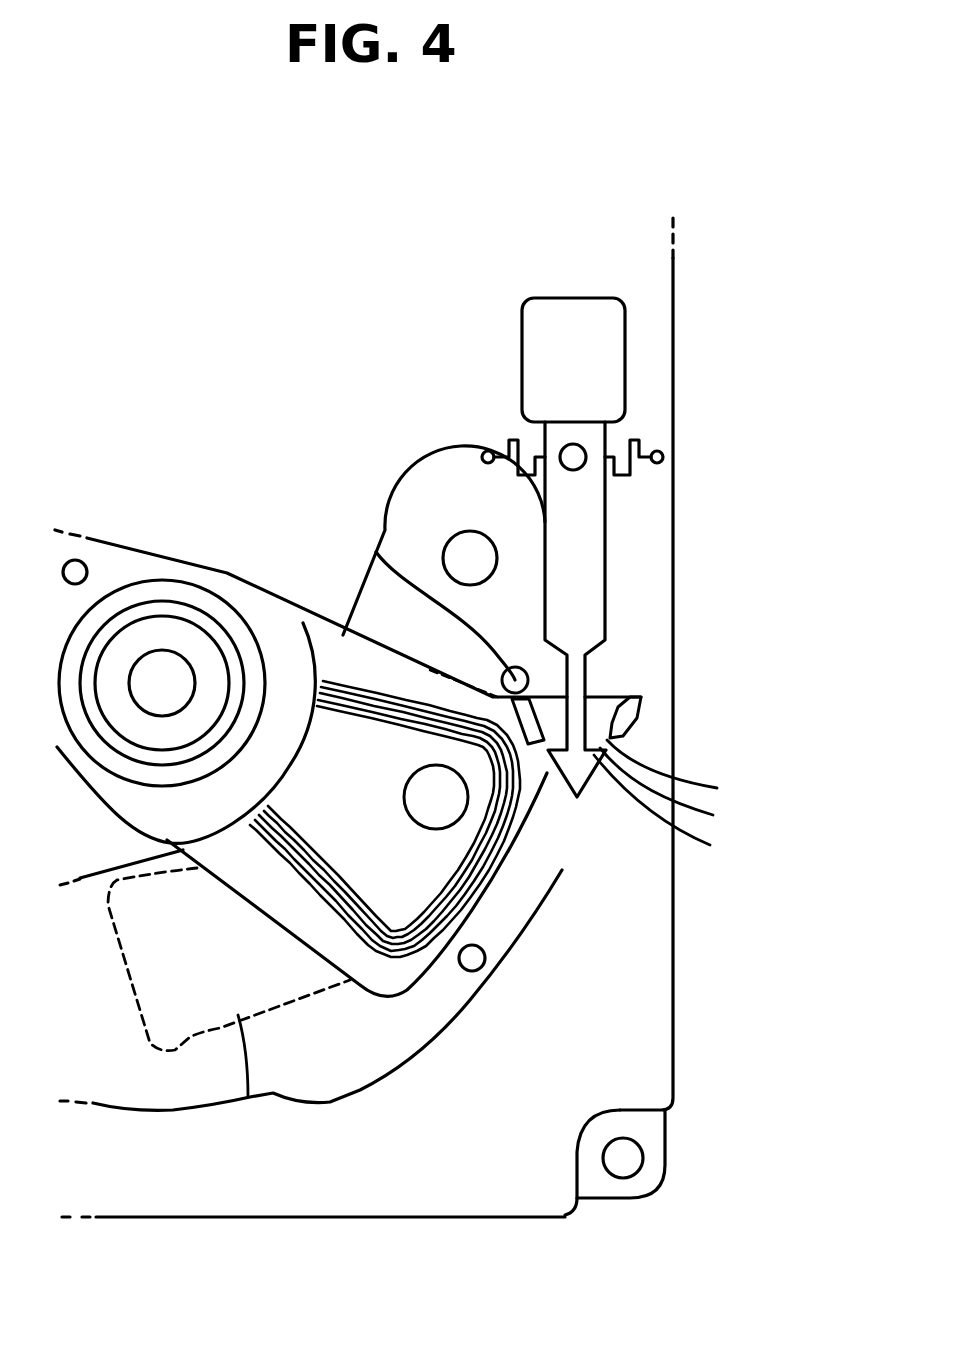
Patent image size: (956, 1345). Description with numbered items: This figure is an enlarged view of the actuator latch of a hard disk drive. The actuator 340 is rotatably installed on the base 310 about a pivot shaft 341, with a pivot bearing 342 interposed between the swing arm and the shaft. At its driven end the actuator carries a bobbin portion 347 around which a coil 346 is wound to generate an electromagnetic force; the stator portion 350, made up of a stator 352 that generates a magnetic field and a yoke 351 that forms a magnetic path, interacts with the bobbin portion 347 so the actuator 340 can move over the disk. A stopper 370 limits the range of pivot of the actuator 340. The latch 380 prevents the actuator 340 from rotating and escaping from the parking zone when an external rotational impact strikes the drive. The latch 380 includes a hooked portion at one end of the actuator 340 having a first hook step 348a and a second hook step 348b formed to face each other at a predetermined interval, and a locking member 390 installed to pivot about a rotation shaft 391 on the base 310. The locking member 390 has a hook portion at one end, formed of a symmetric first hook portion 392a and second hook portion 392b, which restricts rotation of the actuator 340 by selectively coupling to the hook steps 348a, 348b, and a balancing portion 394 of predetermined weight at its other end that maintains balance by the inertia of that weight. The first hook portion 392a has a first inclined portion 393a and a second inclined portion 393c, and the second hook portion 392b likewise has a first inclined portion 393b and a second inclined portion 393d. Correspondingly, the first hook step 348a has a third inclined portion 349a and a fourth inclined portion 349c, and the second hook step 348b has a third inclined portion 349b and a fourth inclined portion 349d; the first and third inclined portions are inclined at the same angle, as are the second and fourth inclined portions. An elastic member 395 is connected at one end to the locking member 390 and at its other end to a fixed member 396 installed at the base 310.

The base 310 is at (640, 1023).
The actuator 340 is at (220, 553).
The pivot shaft 341 is at (168, 672).
The pivot bearing 342 is at (228, 652).
The coil 346 is at (403, 962).
The bobbin portion 347 is at (372, 977).
The first hook step 348a is at (525, 720).
The second hook step 348b is at (630, 718).
The third inclined portion 349a is at (404, 795).
The third inclined portion 349b is at (613, 733).
The fourth inclined portion 349c is at (537, 710).
The fourth inclined portion 349d is at (617, 698).
The stator portion 350 is at (229, 1035).
The yoke 351 is at (173, 1085).
The stator 352 is at (250, 1085).
The stopper 370 is at (375, 552).
The latch 380 is at (629, 636).
The locking member 390 is at (578, 512).
The rotation shaft 391 is at (563, 446).
The first hook portion 392a is at (385, 819).
The second hook portion 392b is at (692, 806).
The first inclined portion 393a is at (500, 800).
The first inclined portion 393b is at (698, 773).
The second inclined portion 393c is at (550, 767).
The second inclined portion 393d is at (688, 814).
The balancing portion 394 is at (575, 307).
The elastic member 395 is at (512, 442).
The fixed member 396 is at (482, 455).